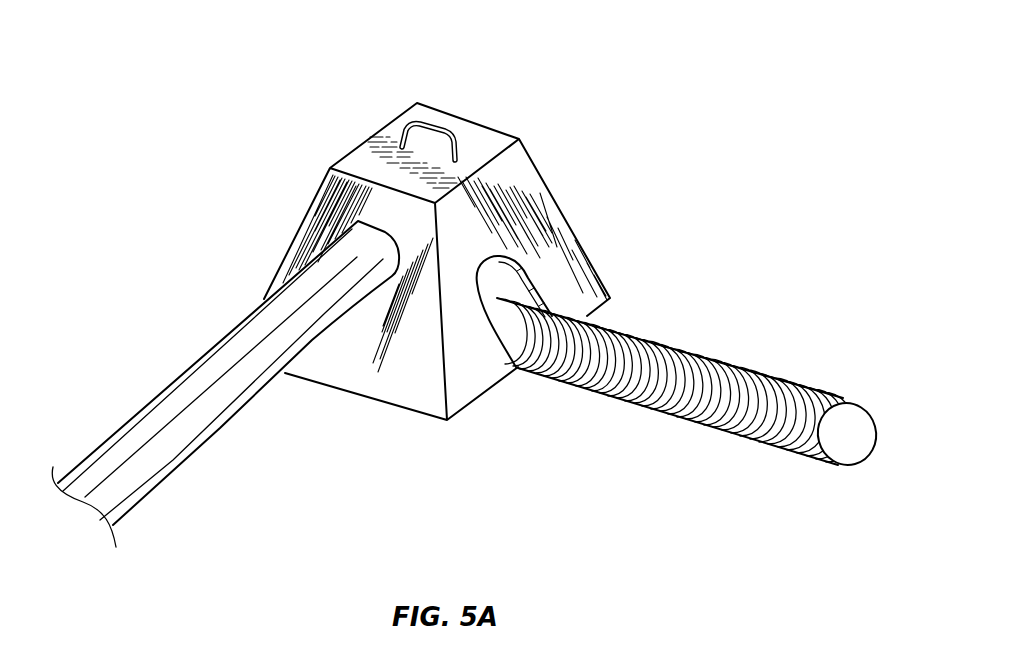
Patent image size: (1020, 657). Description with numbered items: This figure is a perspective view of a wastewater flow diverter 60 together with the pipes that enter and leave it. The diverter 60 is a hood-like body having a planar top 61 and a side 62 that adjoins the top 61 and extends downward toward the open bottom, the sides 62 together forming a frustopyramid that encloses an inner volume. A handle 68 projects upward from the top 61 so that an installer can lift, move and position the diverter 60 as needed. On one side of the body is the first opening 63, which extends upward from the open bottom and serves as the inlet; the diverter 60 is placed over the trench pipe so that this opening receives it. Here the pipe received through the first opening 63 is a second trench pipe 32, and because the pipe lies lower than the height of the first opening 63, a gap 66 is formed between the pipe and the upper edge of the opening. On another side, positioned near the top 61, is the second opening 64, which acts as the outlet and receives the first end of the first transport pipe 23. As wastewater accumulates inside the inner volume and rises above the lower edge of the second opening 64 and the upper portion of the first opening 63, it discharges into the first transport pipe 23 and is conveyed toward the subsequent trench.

The wastewater flow diverter 60 is at (516, 73).
The top 61 is at (372, 152).
The side 62 is at (357, 225).
The first opening 63 is at (498, 257).
The second opening 64 is at (397, 283).
The gap 66 is at (492, 278).
The handle 68 is at (420, 125).
The first transport pipe 23 is at (183, 392).
The second trench pipe 32 is at (697, 373).